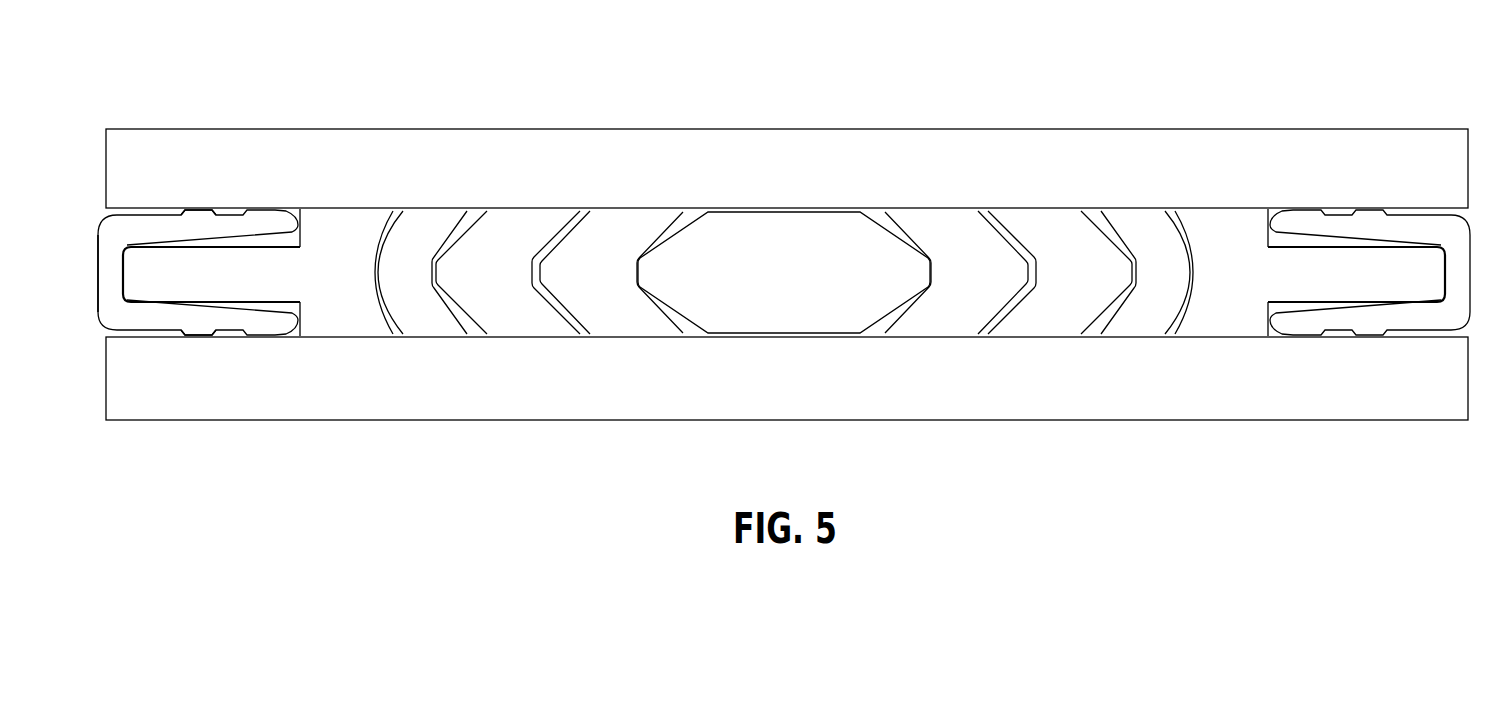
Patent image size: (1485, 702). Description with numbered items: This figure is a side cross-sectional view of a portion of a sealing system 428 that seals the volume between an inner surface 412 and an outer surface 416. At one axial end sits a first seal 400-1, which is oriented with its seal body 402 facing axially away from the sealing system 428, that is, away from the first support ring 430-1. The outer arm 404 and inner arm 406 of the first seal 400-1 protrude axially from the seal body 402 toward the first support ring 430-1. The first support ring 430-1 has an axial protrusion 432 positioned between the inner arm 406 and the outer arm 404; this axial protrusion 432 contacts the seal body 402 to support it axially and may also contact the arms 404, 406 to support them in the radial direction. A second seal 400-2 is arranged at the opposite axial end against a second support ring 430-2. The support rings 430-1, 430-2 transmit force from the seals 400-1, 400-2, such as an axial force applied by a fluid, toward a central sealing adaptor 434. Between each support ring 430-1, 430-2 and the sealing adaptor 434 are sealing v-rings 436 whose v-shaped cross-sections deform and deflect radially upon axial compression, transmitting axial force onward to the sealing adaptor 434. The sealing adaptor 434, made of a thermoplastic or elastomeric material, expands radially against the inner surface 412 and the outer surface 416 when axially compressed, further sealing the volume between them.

The first seal 400-1 is at (155, 223).
The second seal 400-2 is at (1428, 235).
The seal body 402 is at (111, 283).
The outer arm 404 is at (230, 223).
The inner arm 406 is at (206, 325).
The inner surface 412 is at (768, 390).
The outer surface 416 is at (768, 178).
The sealing system 428 is at (802, 120).
The first support ring 430-1 is at (311, 285).
The second support ring 430-2 is at (1218, 285).
The axial protrusion 432 is at (186, 285).
The sealing adaptor 434 is at (768, 285).
The sealing v-ring 436 is at (473, 285).